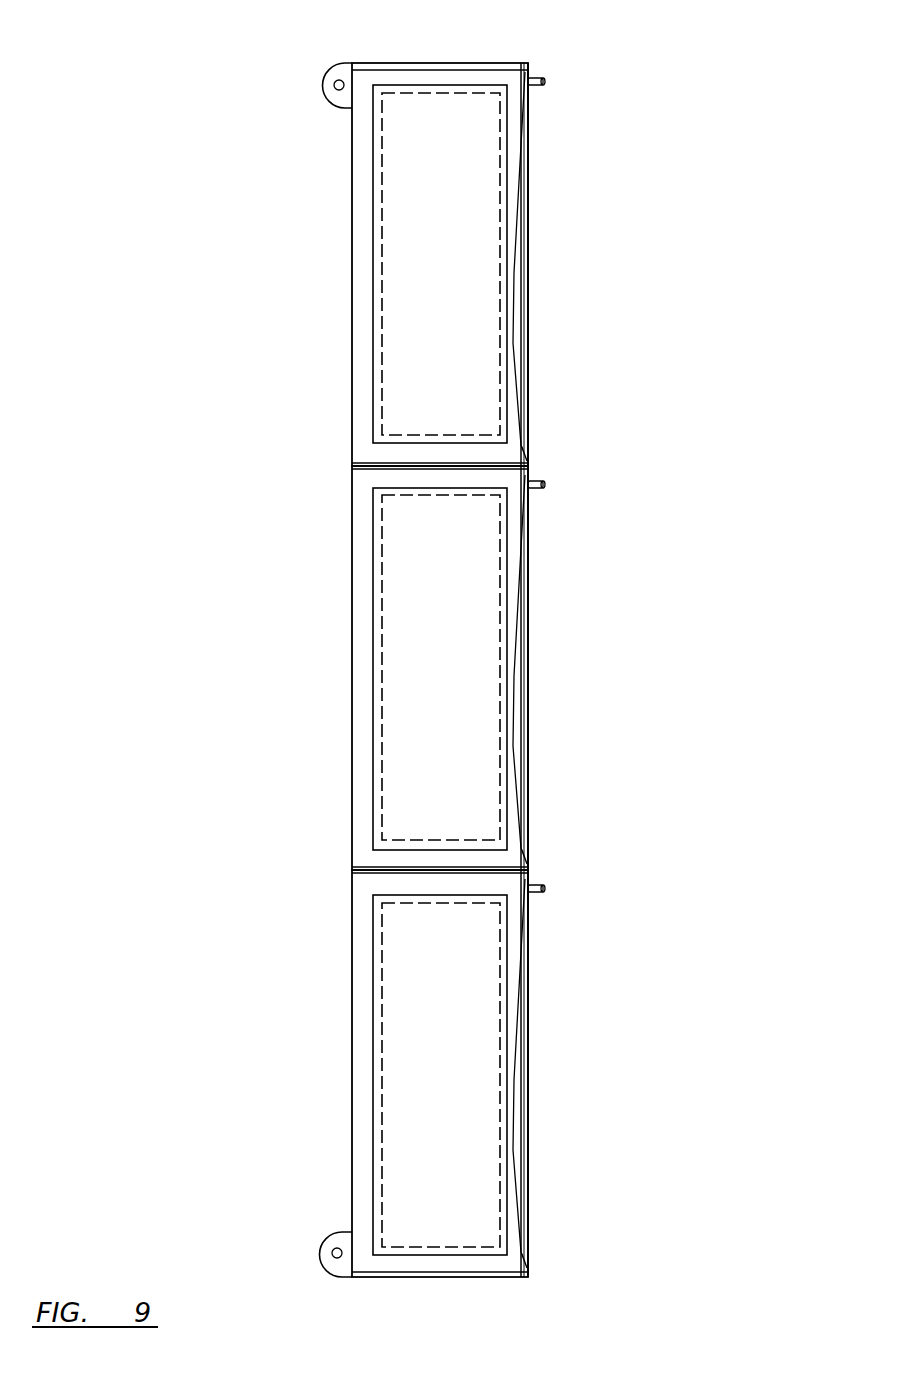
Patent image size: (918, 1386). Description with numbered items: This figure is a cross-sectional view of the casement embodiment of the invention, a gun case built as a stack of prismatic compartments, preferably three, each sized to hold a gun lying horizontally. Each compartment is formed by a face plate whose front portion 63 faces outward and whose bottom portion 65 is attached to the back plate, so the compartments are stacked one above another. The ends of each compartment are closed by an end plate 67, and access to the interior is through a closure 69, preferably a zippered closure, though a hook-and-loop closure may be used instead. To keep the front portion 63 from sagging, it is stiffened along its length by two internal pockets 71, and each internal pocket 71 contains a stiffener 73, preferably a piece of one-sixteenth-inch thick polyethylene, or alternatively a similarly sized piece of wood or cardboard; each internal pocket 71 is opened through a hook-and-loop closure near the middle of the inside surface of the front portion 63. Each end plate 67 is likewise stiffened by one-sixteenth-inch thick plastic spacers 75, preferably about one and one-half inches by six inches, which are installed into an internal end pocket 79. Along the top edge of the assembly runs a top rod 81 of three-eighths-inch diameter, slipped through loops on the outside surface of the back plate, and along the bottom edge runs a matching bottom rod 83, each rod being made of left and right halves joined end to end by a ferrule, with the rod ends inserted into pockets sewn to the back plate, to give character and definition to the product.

The front portion 63 is at (530, 125).
The bottom portion 65 is at (384, 469).
The end plate 67 is at (357, 238).
The closure 69 is at (535, 77).
The internal pocket 71 is at (518, 270).
The stiffener 73 is at (523, 340).
The plastic spacer 75 is at (500, 175).
The internal end pocket 79 is at (373, 335).
The top rod 81 is at (340, 70).
The bottom rod 83 is at (321, 1246).